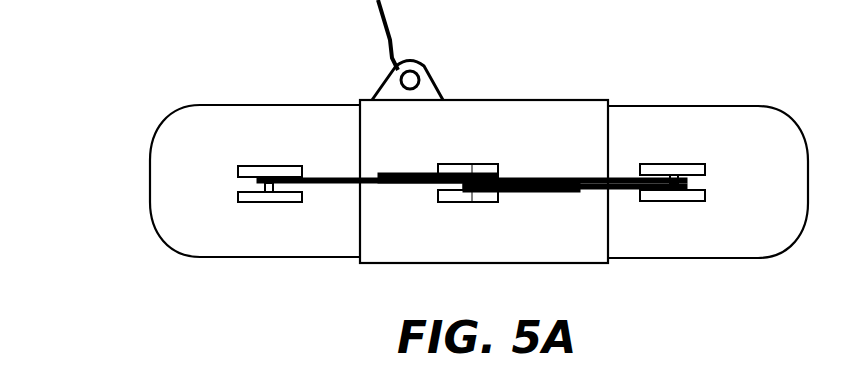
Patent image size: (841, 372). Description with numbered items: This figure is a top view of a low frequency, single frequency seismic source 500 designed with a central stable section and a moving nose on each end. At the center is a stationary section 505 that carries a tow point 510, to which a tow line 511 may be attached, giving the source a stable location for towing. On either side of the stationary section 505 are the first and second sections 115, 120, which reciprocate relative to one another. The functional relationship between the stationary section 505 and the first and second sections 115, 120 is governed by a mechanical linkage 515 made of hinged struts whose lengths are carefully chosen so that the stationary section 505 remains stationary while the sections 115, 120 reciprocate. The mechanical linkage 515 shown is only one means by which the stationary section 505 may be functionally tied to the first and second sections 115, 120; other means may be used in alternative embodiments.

The seismic source 500 is at (118, 53).
The first section 115 is at (240, 106).
The second section 120 is at (705, 107).
The stationary section 505 is at (609, 100).
The tow point 510 is at (428, 66).
The tow line 511 is at (377, 13).
The mechanical linkage 515 is at (486, 149).